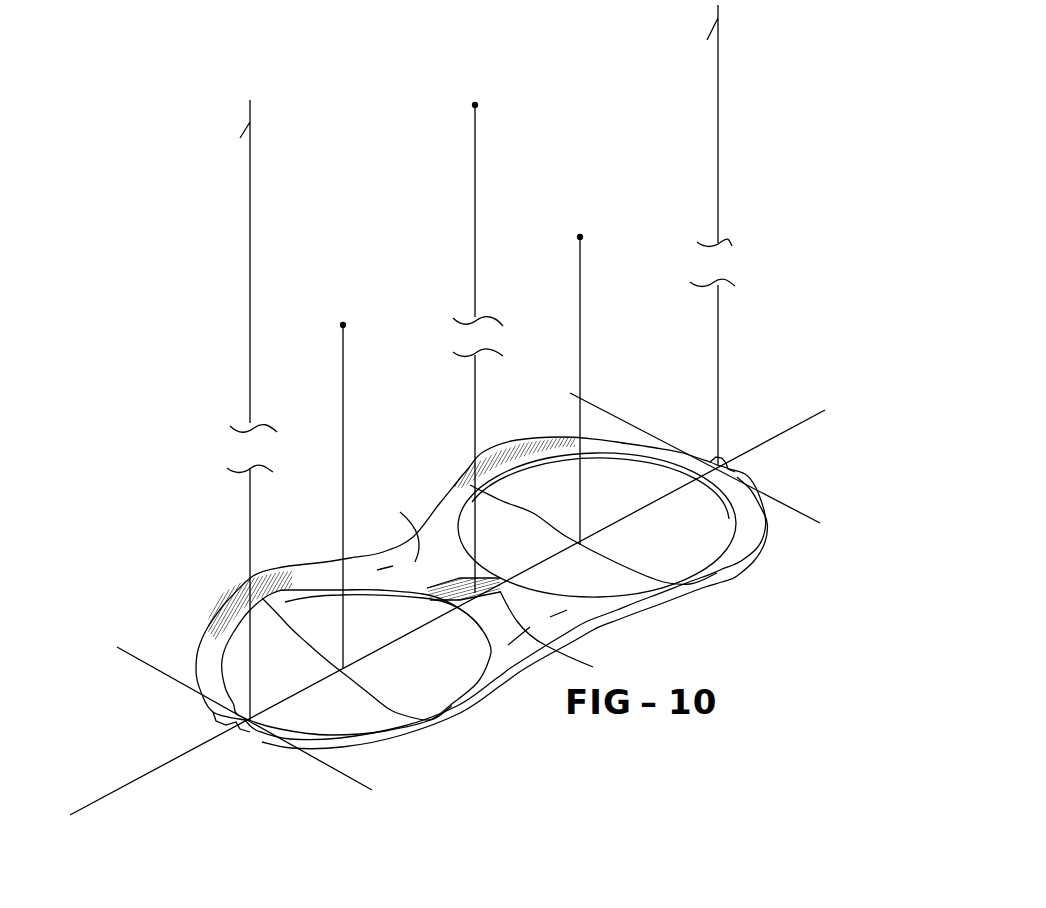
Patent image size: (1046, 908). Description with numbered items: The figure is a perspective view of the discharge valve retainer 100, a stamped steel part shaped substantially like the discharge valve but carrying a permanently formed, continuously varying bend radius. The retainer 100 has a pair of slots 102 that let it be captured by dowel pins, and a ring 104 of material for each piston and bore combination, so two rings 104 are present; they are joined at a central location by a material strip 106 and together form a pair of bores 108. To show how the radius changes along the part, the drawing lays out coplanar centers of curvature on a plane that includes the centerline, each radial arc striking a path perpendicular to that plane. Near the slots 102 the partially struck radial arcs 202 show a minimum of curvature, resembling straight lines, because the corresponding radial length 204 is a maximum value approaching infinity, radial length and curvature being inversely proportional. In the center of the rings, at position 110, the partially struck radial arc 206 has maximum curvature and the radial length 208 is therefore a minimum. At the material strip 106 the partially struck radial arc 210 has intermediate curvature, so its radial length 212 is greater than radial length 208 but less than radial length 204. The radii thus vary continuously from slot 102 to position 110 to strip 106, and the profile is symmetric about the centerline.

The discharge valve retainer 100 is at (137, 569).
The slots 102 is at (237, 728).
The ring 104 is at (305, 578).
The material strip 106 is at (480, 583).
The bores 108 is at (262, 608).
The position 110 is at (252, 588).
The partially struck radial arcs 202 is at (150, 667).
The radial length 204 is at (250, 272).
The partially struck radial arc 206 is at (381, 697).
The radial length 208 is at (344, 418).
The partially struck radial arc 210 is at (407, 520).
The radial length 212 is at (477, 182).